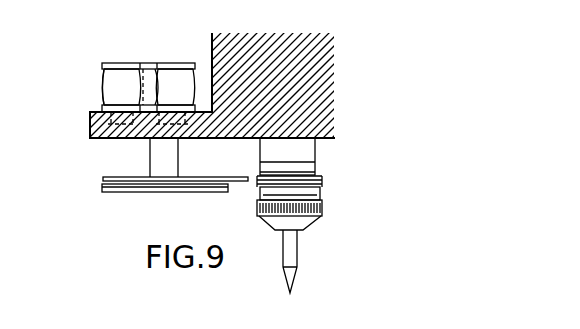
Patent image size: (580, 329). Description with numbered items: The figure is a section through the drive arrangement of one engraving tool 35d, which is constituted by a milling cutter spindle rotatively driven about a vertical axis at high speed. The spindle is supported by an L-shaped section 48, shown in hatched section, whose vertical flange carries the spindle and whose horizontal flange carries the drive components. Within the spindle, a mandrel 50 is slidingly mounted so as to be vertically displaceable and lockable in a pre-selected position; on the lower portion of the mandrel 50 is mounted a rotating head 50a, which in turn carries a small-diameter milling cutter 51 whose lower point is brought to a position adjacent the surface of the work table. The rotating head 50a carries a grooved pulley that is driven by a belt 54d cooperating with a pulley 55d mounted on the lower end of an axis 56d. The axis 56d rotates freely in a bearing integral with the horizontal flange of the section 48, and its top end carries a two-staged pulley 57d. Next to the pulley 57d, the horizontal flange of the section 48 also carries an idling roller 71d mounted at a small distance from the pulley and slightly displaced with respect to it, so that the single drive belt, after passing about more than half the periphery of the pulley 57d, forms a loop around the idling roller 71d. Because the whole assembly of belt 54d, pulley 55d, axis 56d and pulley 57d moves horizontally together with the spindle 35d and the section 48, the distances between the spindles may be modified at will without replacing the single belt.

The L-shaped section 48 is at (312, 55).
The mandrel 50 is at (302, 148).
The rotating head 50a is at (308, 197).
The milling cutter 51 is at (290, 250).
The engraving tool 35d is at (260, 152).
The belt 54d is at (238, 192).
The pulley 55d is at (114, 193).
The axis 56d is at (150, 158).
The two-staged pulley 57d is at (177, 63).
The idling roller 71d is at (113, 85).